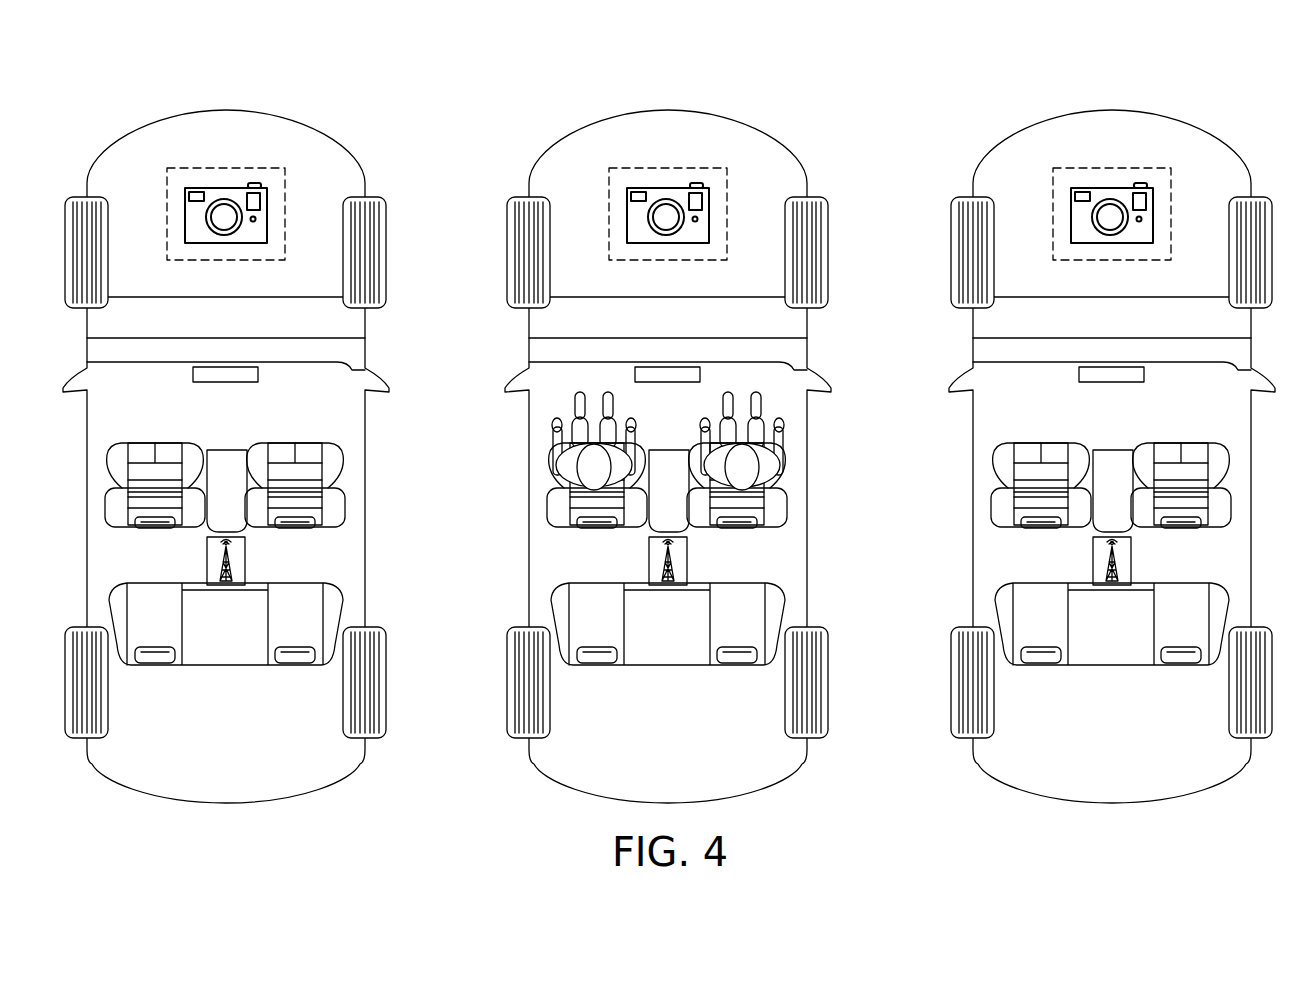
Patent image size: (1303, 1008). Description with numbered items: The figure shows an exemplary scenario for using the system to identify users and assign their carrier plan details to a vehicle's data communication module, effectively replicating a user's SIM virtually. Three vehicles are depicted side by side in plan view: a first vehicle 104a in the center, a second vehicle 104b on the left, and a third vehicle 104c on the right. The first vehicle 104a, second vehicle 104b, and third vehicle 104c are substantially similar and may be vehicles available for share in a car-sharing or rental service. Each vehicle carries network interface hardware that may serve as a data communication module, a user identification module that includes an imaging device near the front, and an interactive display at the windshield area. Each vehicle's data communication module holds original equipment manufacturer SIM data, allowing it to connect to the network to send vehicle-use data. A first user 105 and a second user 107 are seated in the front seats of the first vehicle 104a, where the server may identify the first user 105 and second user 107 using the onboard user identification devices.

The first vehicle 104a is at (669, 428).
The second vehicle 104b is at (226, 428).
The third vehicle 104c is at (1112, 428).
The first user 105 is at (558, 450).
The second user 107 is at (779, 450).